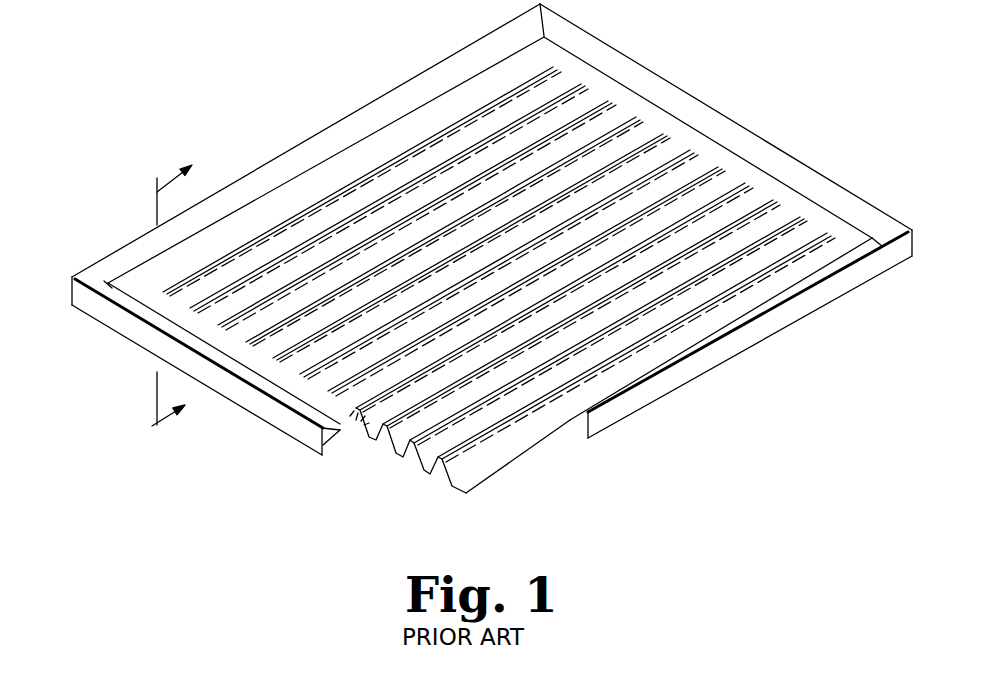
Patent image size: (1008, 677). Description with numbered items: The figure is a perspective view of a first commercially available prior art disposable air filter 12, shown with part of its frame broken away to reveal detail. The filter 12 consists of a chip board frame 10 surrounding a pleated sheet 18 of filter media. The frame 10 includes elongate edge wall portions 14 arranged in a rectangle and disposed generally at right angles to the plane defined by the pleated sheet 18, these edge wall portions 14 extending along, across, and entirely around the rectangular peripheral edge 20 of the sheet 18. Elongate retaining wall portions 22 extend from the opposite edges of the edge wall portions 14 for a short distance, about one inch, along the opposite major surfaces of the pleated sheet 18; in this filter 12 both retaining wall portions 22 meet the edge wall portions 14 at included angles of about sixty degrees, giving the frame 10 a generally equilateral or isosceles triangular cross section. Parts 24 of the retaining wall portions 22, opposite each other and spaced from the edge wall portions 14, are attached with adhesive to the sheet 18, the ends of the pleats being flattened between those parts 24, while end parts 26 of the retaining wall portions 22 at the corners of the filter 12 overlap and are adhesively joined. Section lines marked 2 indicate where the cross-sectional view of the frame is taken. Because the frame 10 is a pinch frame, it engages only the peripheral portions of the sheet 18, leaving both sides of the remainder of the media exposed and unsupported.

The section line 2- 2 is at (156, 307).
The chip board frame 10 is at (750, 357).
The disposable air filter 12 is at (700, 46).
The edge wall portions 14 is at (252, 400).
The pleated sheet of filter media 18 is at (514, 476).
The rectangular peripheral edge 20 is at (442, 484).
The retaining wall portions 22 is at (258, 178).
The parts of the retaining wall portions 24 is at (348, 148).
The end parts of the retaining wall portions 26 is at (108, 282).